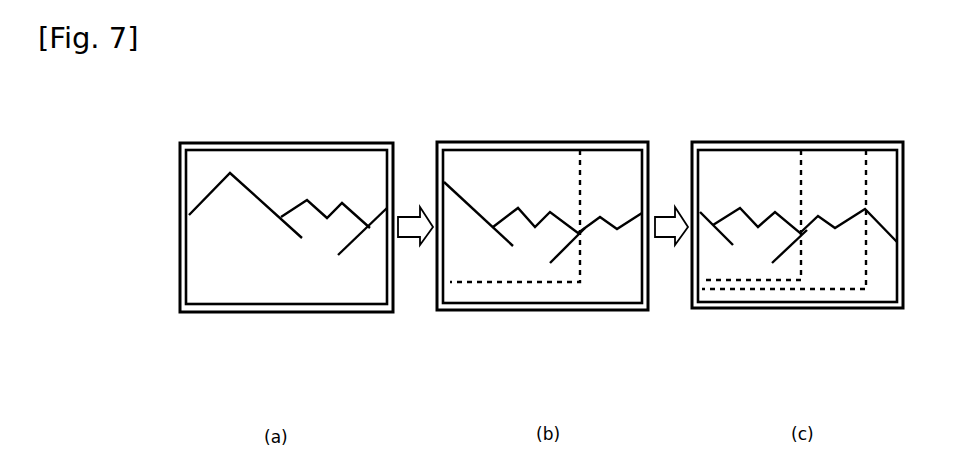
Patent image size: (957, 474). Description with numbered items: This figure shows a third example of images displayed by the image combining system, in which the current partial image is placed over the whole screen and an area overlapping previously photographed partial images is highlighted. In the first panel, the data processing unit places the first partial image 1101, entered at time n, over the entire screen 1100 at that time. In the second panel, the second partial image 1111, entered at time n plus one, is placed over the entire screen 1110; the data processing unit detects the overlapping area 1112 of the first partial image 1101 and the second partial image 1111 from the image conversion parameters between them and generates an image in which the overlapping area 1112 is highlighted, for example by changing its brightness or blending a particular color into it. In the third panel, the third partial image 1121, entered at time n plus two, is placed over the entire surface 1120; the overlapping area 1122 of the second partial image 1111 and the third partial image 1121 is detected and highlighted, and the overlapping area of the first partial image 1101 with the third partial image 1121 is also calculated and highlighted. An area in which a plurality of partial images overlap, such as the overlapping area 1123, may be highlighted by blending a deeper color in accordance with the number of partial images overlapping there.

The entire screen 1100 is at (207, 312).
The first partial image 1101 is at (350, 312).
The entire screen 1110 is at (467, 310).
The second partial image 1111 is at (595, 310).
The overlapping area 1112 is at (520, 157).
The entire surface 1120 is at (717, 310).
The third partial image 1121 is at (870, 310).
The overlapping area 1122 is at (833, 157).
The overlapping area 1123 is at (757, 158).